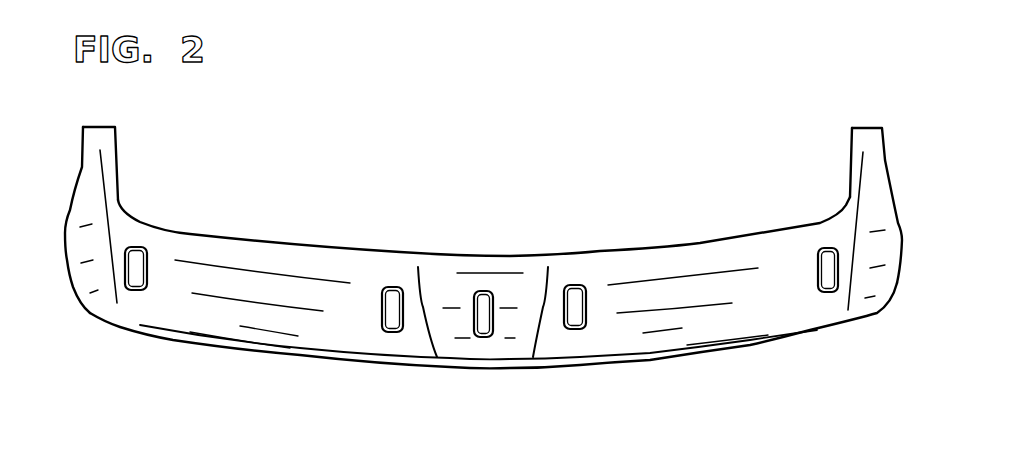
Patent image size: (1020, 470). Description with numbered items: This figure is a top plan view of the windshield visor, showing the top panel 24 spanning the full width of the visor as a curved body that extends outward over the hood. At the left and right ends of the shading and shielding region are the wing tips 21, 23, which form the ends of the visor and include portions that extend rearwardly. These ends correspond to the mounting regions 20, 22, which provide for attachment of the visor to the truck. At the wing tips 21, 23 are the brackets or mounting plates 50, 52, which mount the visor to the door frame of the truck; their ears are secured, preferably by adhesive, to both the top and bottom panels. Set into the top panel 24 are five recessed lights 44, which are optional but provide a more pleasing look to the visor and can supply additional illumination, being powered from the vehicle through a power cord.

The mounting region 20 is at (795, 153).
The wing tip 21 is at (860, 137).
The mounting region 22 is at (172, 145).
The wing tip 23 is at (100, 138).
The top panel 24 is at (328, 343).
The recessed lights 44 is at (140, 257).
The bracket or mounting plate 50 is at (880, 145).
The bracket or mounting plate 52 is at (82, 150).